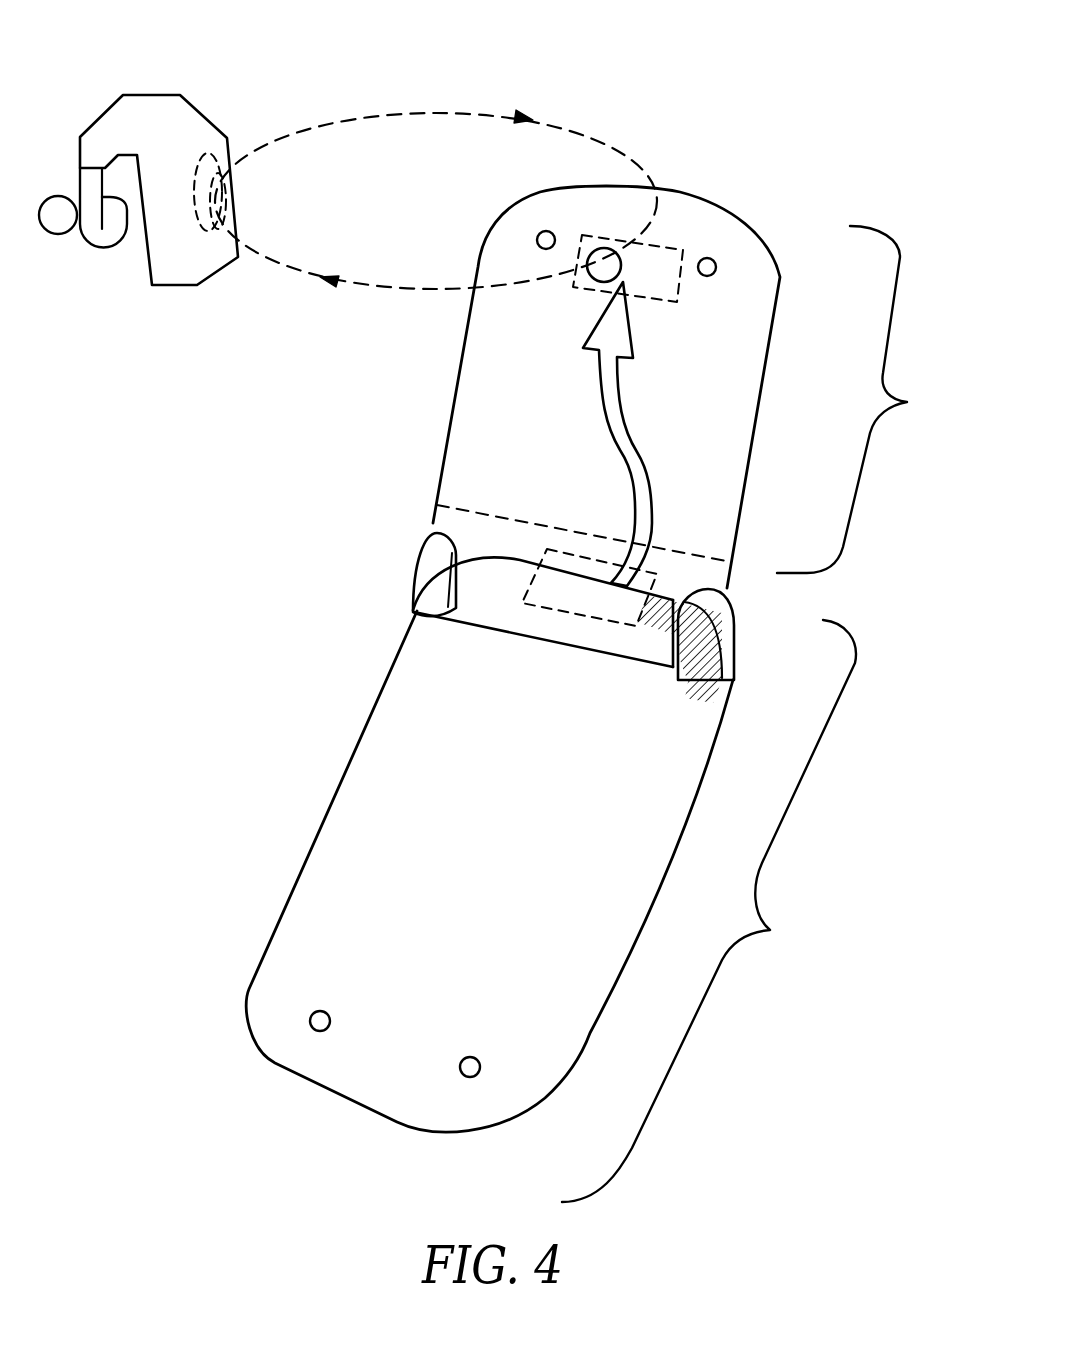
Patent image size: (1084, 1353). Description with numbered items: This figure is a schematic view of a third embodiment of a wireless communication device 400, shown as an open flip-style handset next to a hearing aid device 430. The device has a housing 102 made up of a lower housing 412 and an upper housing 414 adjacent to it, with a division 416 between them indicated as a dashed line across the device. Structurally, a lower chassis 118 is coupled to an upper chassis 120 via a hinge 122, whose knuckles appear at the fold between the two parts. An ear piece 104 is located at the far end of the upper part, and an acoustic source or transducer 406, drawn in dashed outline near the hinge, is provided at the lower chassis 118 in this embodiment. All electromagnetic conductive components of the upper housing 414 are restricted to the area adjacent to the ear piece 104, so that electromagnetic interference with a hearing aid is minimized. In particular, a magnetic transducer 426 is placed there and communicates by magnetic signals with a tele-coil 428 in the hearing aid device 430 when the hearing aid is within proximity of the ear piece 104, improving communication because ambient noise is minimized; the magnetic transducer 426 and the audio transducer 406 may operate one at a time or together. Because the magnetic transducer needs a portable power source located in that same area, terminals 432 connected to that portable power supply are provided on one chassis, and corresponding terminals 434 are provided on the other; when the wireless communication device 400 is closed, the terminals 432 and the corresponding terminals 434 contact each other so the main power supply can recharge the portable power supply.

The wireless communication device 400 is at (107, 34).
The hearing aid device 430 is at (152, 95).
The tele-coil 428 is at (206, 211).
The terminals 432 is at (552, 233).
The magnetic transducer 426 is at (622, 265).
The ear piece 104 is at (582, 290).
The upper chassis 120 is at (460, 377).
The division 416 is at (583, 532).
The housing 102 is at (318, 549).
The hinge 122 is at (425, 575).
The acoustic transducer 406 is at (527, 593).
The lower chassis 118 is at (351, 760).
The corresponding terminals 434 is at (323, 1011).
The upper housing 414 is at (907, 402).
The lower housing 412 is at (768, 932).